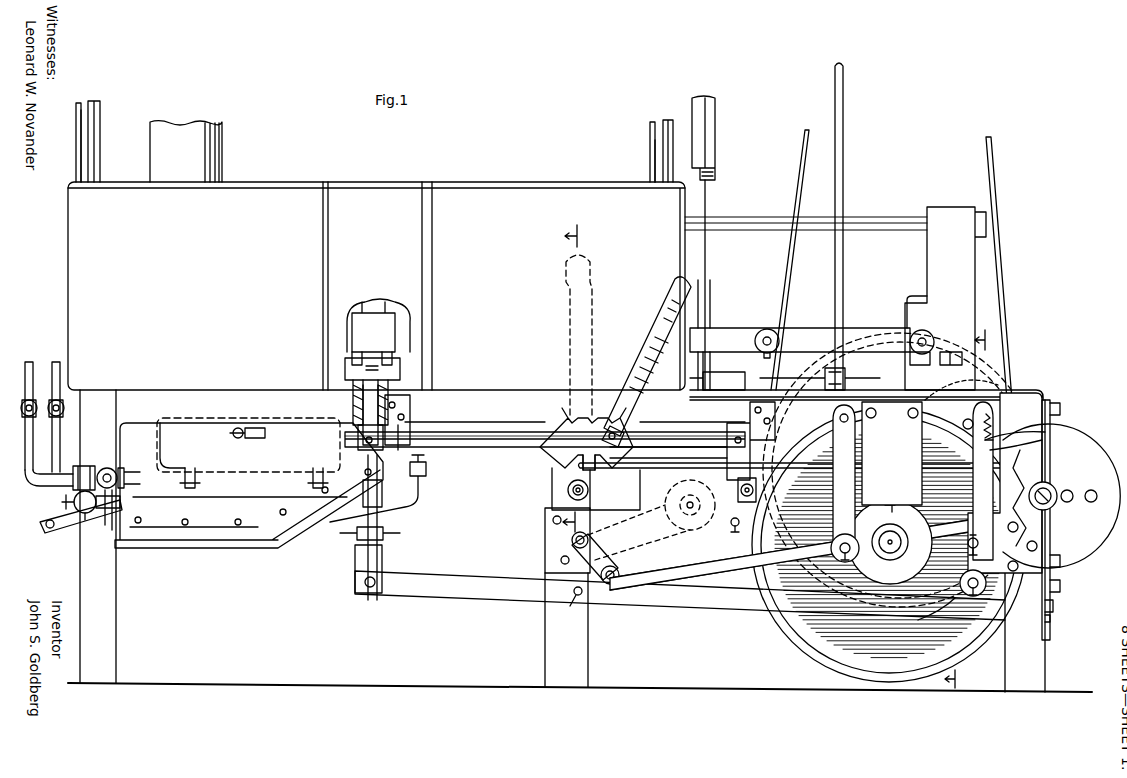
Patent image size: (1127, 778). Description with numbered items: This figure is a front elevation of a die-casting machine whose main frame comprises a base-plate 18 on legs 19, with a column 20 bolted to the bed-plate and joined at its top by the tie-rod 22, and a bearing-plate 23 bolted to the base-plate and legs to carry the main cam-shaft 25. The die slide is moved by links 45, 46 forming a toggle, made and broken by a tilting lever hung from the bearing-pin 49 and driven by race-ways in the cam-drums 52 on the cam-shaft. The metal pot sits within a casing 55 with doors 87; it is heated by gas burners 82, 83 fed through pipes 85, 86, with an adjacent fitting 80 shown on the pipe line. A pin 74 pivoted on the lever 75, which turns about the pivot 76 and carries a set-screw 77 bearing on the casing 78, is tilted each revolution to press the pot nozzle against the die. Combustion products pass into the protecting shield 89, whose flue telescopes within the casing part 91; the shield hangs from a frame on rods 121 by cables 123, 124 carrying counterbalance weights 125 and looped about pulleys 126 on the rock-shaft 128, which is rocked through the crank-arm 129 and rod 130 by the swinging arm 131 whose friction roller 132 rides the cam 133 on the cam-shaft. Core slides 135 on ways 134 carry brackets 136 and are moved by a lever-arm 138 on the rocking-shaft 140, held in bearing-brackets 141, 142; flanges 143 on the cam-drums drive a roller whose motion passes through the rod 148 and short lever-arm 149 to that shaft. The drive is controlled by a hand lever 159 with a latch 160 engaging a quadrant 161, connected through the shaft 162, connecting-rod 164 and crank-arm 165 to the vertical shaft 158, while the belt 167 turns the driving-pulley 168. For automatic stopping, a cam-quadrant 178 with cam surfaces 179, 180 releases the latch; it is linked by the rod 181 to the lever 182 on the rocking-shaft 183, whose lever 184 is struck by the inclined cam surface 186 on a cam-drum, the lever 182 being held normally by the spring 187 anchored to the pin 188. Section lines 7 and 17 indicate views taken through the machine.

The section line 7- 7 is at (972, 509).
The section line 17- 17 is at (577, 232).
The base-plate 18 is at (1033, 387).
The legs 19 is at (116, 634).
The column 20 is at (950, 212).
The tie-rod 22 is at (742, 217).
The bearing-plate 23 is at (1066, 578).
The main cam-shaft 25 is at (905, 540).
The link 45 is at (738, 333).
The link 46 is at (803, 328).
The bearing-pin 49 is at (1050, 500).
The cam-drum 52 is at (812, 635).
The casing 55 is at (249, 485).
The pin 74 is at (382, 490).
The lever 75 is at (680, 603).
The pivot point 76 is at (574, 605).
The adjustable set-screw 77 is at (1054, 604).
The casing 78 is at (1061, 496).
The pipe tee 80 is at (385, 546).
The gas burner 82 is at (108, 528).
The gas burner 83 is at (106, 468).
The pipe 85 is at (54, 362).
The pipe 86 is at (25, 440).
The doors 87 is at (248, 453).
The protecting shield 89 is at (472, 182).
The co-acting casing part 91 is at (223, 157).
The rods or columns 121 is at (100, 105).
The wire cable 123 is at (82, 152).
The wire cable 124 is at (655, 152).
The counterbalance weights 125 is at (715, 146).
The pulleys 126 is at (665, 494).
The rock-shaft 128 is at (567, 540).
The crank-arm 129 is at (620, 548).
The rod 130 is at (805, 552).
The swinging arm 131 is at (856, 455).
The friction roller 132 is at (836, 540).
The cam 133 is at (896, 500).
The ways 134 is at (405, 380).
The slide 135 is at (402, 362).
The base-plate or bracket 136 is at (370, 312).
The lever-arm 138 is at (362, 398).
The rocking-shaft 140 is at (481, 440).
The bearing-bracket 141 is at (410, 420).
The bearing-bracket 142 is at (752, 418).
The flanges 143 is at (828, 660).
The rod 148 is at (740, 500).
The short lever-arm 149 is at (732, 458).
The vertical shaft 158 is at (843, 180).
The hand lever 159 is at (648, 333).
The latch 160 is at (626, 412).
The quadrant 161 is at (568, 412).
The shaft 162 is at (574, 494).
The connecting-rod 164 is at (720, 372).
The crank-arm 165 is at (845, 378).
The belt 167 is at (1002, 294).
The driving-pulley 168 is at (1000, 378).
The cam-quadrant 178 is at (572, 472).
The cam surface 179 is at (586, 439).
The cam surface 180 is at (604, 452).
The rod 181 is at (805, 474).
The lever 182 is at (990, 440).
The rocking-shaft 183 is at (982, 546).
The lever 184 is at (988, 588).
The inclined cam surface 186 is at (790, 500).
The spring 187 is at (1050, 393).
The pin 188 is at (968, 418).